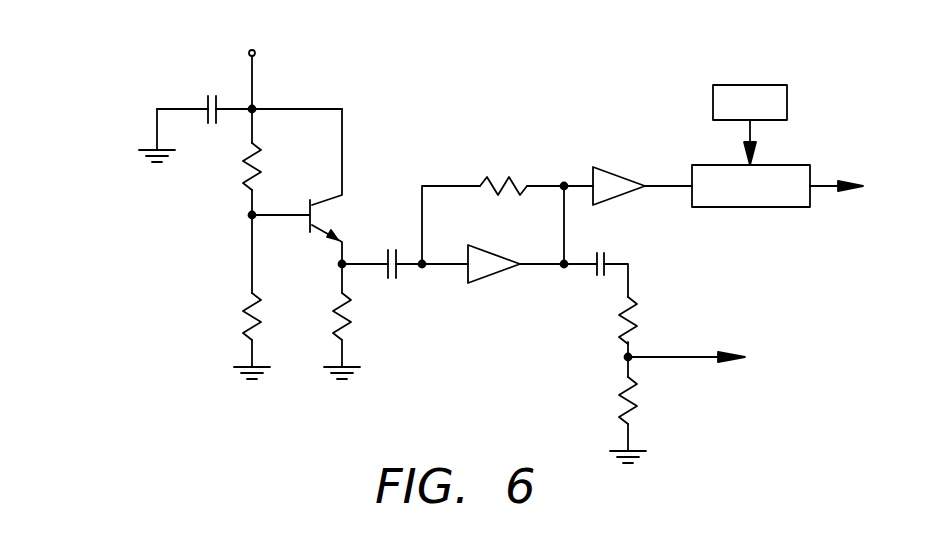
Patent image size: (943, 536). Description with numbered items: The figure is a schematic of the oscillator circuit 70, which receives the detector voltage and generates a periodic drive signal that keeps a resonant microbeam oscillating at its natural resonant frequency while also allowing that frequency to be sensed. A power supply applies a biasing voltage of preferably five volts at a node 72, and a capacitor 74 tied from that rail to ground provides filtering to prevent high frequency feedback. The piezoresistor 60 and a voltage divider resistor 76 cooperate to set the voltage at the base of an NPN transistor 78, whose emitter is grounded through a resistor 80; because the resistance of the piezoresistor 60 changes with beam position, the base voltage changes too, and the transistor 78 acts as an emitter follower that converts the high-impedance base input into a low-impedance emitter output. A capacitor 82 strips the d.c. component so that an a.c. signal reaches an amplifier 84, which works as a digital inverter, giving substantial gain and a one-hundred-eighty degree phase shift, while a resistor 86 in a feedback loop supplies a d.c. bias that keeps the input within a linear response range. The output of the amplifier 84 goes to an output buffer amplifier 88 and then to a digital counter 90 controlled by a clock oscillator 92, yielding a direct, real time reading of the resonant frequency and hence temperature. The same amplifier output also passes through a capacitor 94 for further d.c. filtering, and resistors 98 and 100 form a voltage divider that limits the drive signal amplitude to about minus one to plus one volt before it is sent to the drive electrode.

The piezoresistor 60 is at (243, 172).
The oscillator circuit 70 is at (145, 273).
The node 72 is at (257, 53).
The capacitor 74 is at (208, 99).
The voltage divider resistor 76 is at (245, 312).
The NPN transistor 78 is at (336, 201).
The resistor 80 is at (331, 313).
The capacitor 82 is at (397, 279).
The amplifier 84 is at (485, 272).
The resistor 86 is at (503, 175).
The output buffer amplifier 88 is at (616, 165).
The digital counter 90 is at (753, 208).
The clock oscillator 92 is at (752, 83).
The capacitor 94 is at (605, 257).
The resistor 98 is at (640, 303).
The resistor 100 is at (638, 390).